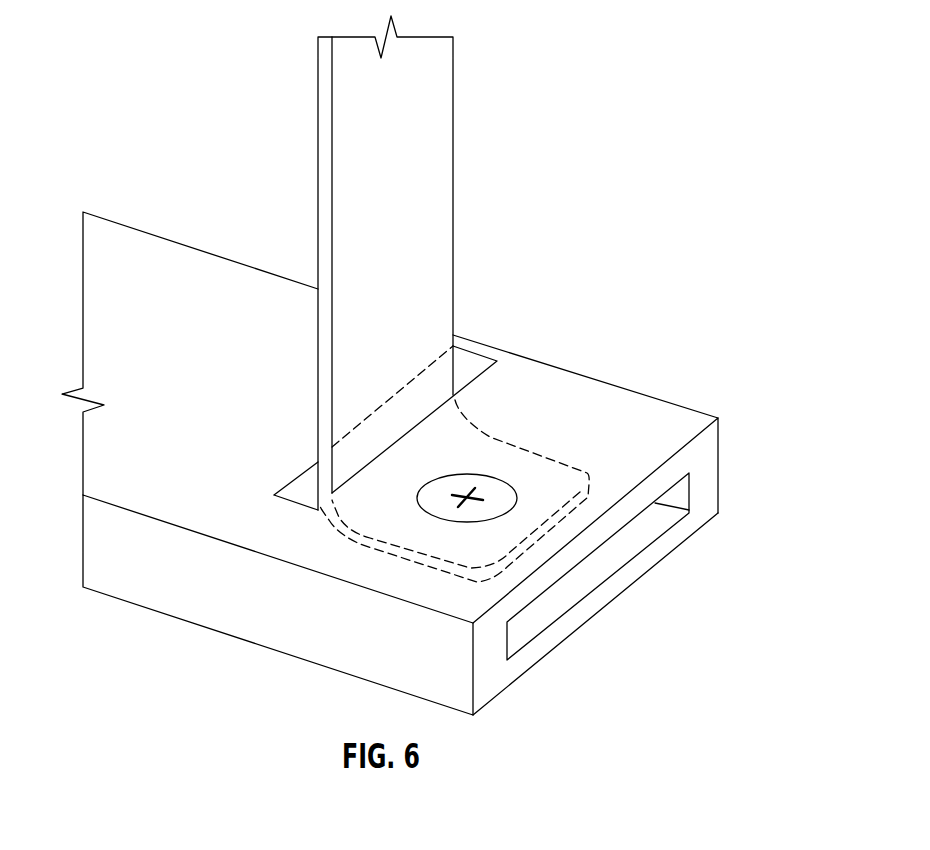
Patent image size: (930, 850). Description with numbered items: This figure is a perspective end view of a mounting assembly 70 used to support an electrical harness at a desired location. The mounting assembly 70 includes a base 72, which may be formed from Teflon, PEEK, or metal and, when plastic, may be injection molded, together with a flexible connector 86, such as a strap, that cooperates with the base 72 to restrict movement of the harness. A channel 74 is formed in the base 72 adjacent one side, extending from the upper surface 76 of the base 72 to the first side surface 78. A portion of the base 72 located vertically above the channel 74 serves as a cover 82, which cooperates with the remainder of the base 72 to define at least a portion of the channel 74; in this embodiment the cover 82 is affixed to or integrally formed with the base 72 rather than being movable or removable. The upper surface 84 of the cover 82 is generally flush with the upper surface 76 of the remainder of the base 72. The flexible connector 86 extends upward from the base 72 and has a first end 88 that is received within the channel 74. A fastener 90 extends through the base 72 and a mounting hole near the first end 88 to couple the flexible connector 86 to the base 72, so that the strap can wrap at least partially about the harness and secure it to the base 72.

The mounting assembly 70 is at (570, 70).
The base 72 is at (188, 605).
The channel 74 is at (590, 563).
The upper surface 76 is at (97, 460).
The first side surface 78 is at (708, 488).
The cover 82 is at (552, 473).
The upper surface of the cover 84 is at (537, 400).
The flexible connector 86 is at (348, 101).
The first end 88 is at (433, 540).
The fastener 90 is at (458, 487).